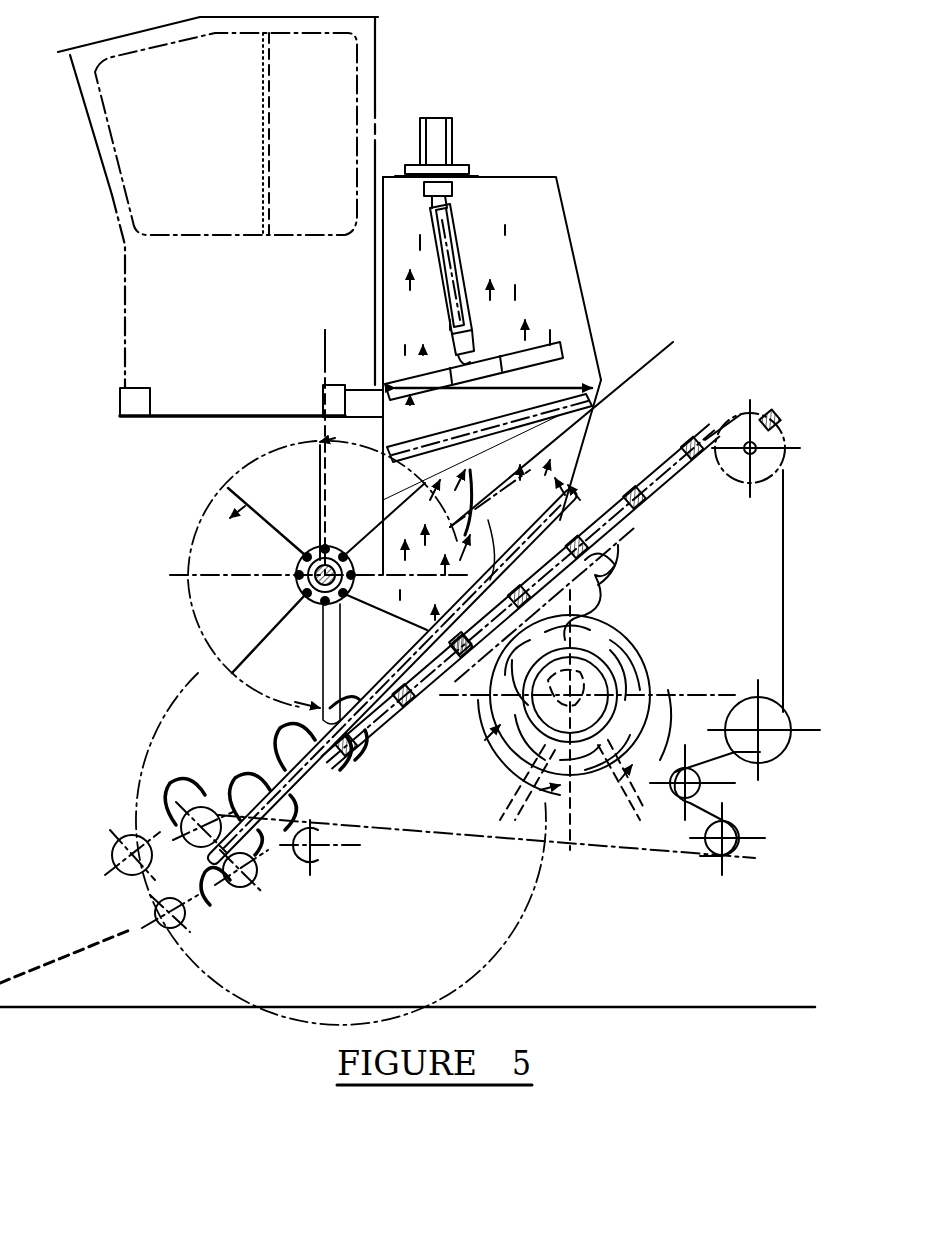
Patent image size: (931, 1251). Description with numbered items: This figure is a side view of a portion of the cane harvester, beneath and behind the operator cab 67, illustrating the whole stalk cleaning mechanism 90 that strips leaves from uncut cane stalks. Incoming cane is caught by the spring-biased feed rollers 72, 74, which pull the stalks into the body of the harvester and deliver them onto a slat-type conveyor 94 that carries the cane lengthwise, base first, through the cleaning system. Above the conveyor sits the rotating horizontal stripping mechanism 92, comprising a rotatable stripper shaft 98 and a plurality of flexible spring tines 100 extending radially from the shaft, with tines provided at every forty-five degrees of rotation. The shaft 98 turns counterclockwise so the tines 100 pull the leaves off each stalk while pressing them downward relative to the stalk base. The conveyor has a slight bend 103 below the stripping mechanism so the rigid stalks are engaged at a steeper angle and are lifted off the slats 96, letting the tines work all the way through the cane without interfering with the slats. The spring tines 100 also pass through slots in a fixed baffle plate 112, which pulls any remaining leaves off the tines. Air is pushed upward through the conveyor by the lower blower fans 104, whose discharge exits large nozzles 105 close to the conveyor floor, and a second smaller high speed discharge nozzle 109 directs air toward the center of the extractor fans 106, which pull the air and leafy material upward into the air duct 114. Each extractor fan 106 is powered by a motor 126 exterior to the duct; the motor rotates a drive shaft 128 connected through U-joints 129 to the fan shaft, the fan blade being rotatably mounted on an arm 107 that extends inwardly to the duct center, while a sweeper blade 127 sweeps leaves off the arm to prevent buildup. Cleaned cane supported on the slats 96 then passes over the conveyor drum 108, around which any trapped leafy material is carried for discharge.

The operator cab 67 is at (125, 292).
The feed roller 72 is at (257, 882).
The feed roller 74 is at (201, 805).
The whole stalk cleaning mechanism 90 is at (160, 662).
The stripping mechanism 92 is at (168, 550).
The slat-type conveyor 94 is at (622, 574).
The slats 96 is at (684, 441).
The stripper shaft 98 is at (292, 597).
The spring tines 100 is at (252, 508).
The bend 103 is at (393, 708).
The lower blower fans 104 is at (660, 656).
The nozzles 105 is at (456, 706).
The extractor fans 106 is at (594, 398).
The arm 107 is at (391, 388).
The conveyor drum 108 is at (783, 466).
The discharge nozzle 109 is at (624, 557).
The baffle plate 112 is at (374, 482).
The air duct 114 is at (577, 237).
The motor 126 is at (450, 118).
The sweeper blade 127 is at (569, 345).
The drive shaft 128 is at (466, 232).
The U-joints 129 is at (458, 188).